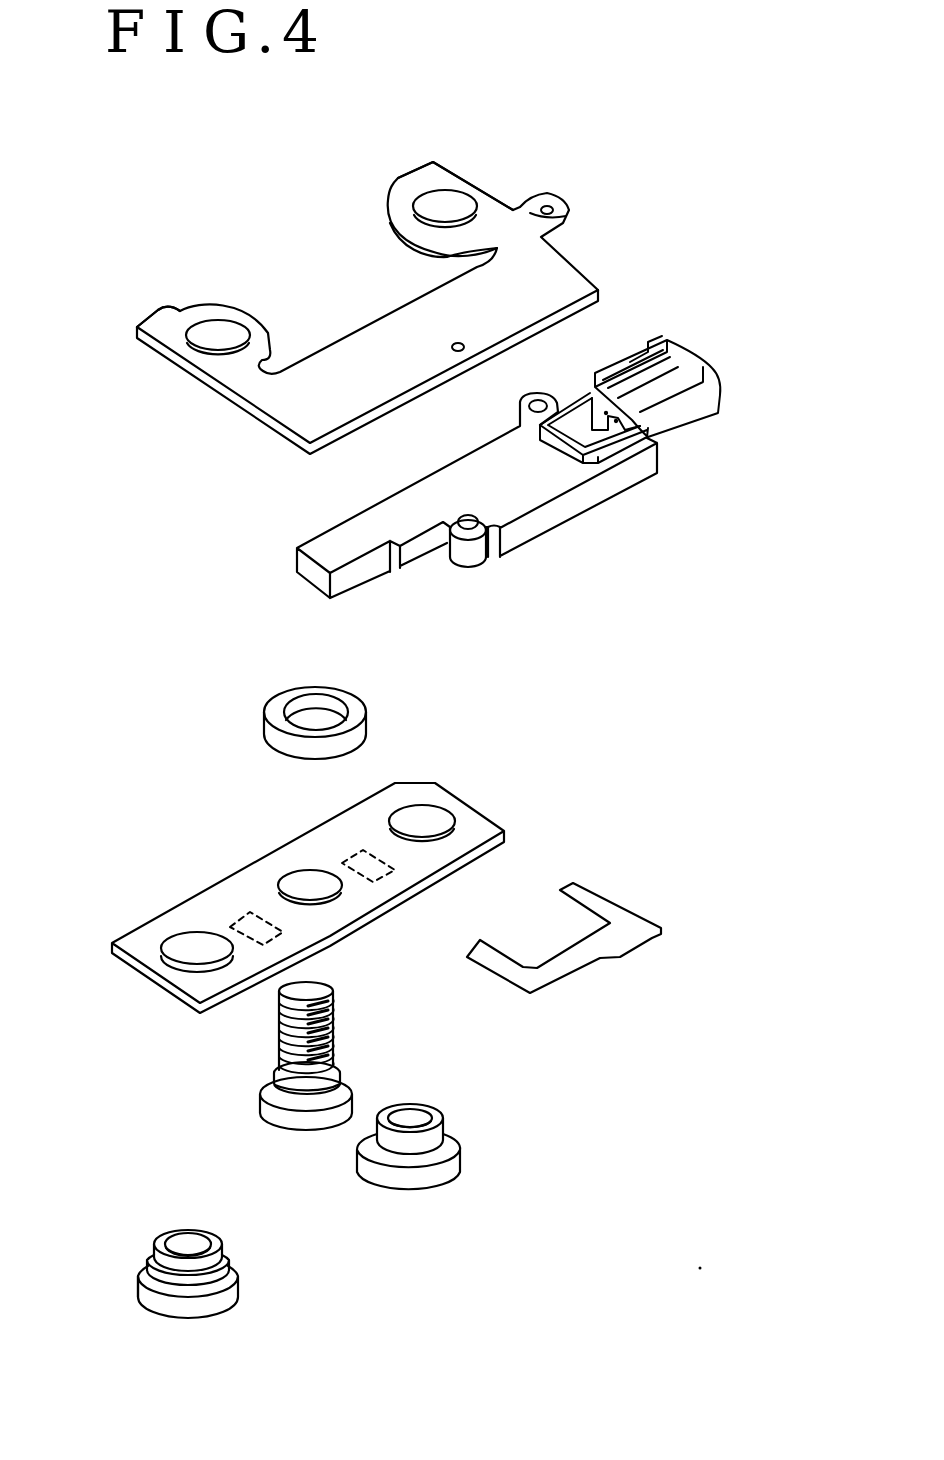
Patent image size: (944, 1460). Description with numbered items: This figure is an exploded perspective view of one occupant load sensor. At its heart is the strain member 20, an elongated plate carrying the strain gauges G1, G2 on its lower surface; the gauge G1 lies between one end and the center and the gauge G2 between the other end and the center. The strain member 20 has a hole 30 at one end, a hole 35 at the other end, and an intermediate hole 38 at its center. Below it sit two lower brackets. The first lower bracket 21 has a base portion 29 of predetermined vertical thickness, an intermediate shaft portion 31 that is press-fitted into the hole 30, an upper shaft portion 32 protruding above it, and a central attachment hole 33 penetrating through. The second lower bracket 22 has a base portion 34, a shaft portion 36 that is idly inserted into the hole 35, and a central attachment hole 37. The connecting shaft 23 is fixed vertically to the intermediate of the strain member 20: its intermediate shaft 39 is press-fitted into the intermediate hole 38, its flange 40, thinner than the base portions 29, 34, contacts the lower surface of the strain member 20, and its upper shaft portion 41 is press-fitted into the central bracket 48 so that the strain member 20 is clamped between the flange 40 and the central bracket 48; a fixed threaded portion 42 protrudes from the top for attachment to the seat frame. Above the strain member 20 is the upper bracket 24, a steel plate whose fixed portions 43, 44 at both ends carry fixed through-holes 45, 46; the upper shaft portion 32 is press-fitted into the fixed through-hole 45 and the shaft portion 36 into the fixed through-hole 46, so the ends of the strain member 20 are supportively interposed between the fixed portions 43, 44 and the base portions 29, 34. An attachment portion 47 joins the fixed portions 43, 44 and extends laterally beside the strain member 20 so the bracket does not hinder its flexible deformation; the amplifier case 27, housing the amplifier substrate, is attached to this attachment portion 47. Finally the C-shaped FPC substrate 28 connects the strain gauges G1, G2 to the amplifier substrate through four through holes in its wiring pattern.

The strain member 20 is at (490, 832).
The first lower bracket 21 is at (180, 1274).
The second lower bracket 22 is at (444, 1143).
The connecting shaft 23 is at (262, 1089).
The upper bracket 24 is at (562, 273).
The amplifier case 27 is at (633, 473).
The FPC substrate 28 is at (613, 917).
The base portion 29 is at (143, 1295).
The hole 30 is at (190, 943).
The intermediate shaft portion 31 is at (213, 1280).
The upper shaft portion 32 is at (175, 1272).
The attachment hole 33 is at (180, 1242).
The base portion 34 is at (412, 1182).
The hole 35 is at (428, 822).
The shaft portion 36 is at (433, 1142).
The attachment hole 37 is at (410, 1113).
The intermediate hole 38 is at (322, 898).
The intermediate shaft 39 is at (288, 1108).
The flange 40 is at (310, 1125).
The upper shaft portion 41 is at (277, 1078).
The fixed threaded portion 42 is at (288, 1030).
The fixed portion 43 is at (167, 327).
The fixed portion 44 is at (432, 172).
The fixed through-hole 45 is at (212, 333).
The fixed through-hole 46 is at (450, 210).
The attachment portion 47 is at (555, 301).
The central bracket 48 is at (285, 698).
The strain gauge G1 is at (240, 922).
The strain gauge G2 is at (333, 852).